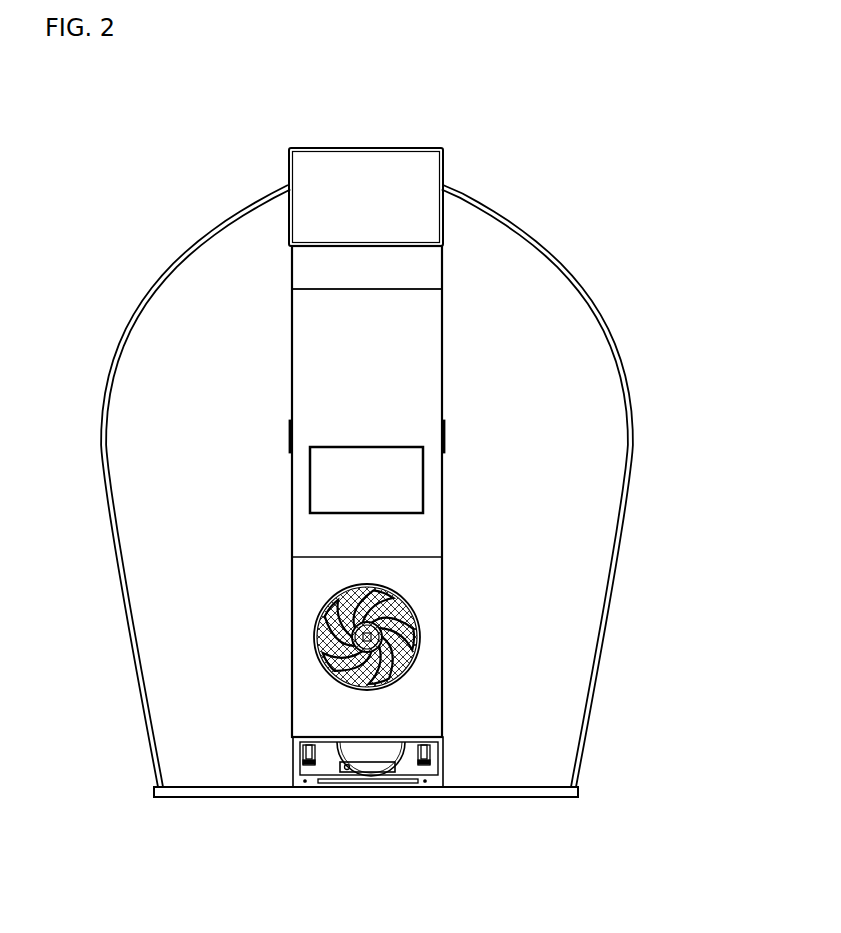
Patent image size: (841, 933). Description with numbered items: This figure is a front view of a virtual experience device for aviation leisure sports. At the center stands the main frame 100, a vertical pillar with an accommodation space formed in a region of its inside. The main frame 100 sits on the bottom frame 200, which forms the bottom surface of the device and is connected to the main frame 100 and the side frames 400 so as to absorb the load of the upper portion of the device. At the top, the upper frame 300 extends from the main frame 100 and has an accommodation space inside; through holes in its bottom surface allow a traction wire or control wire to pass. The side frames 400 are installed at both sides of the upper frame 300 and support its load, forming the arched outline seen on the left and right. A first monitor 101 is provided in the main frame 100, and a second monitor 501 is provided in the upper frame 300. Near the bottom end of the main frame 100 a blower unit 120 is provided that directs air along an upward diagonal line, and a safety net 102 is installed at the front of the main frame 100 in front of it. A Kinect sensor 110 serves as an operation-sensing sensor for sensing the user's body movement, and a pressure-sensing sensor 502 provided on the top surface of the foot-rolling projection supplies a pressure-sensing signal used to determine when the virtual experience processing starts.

The main frame 100 is at (443, 338).
The first monitor 101 is at (405, 479).
The safety net 102 is at (410, 588).
The Kinect sensor 110 is at (360, 772).
The blower unit 120 is at (473, 637).
The bottom frame 200 is at (198, 800).
The upper frame 300 is at (443, 270).
The side frames 400 is at (210, 218).
The second monitor 501 is at (378, 177).
The pressure-sensing sensor 502 is at (433, 775).